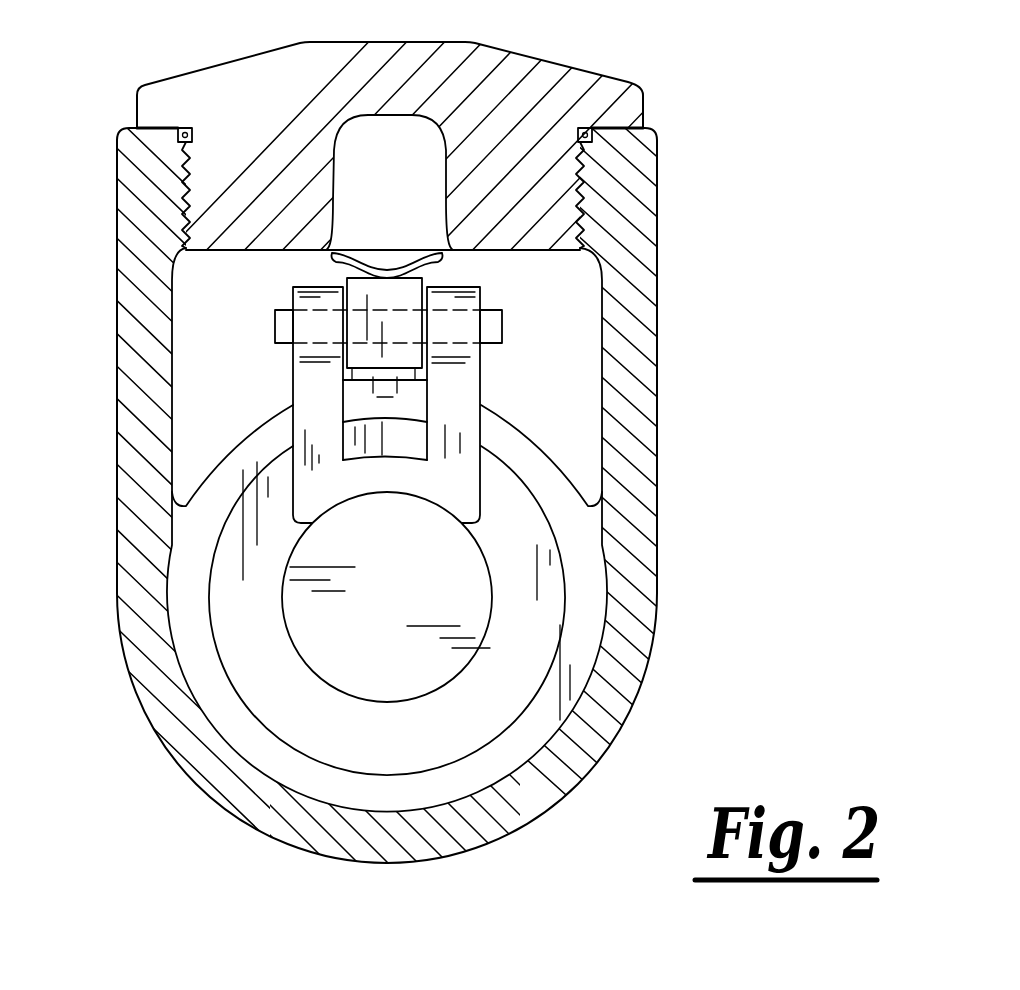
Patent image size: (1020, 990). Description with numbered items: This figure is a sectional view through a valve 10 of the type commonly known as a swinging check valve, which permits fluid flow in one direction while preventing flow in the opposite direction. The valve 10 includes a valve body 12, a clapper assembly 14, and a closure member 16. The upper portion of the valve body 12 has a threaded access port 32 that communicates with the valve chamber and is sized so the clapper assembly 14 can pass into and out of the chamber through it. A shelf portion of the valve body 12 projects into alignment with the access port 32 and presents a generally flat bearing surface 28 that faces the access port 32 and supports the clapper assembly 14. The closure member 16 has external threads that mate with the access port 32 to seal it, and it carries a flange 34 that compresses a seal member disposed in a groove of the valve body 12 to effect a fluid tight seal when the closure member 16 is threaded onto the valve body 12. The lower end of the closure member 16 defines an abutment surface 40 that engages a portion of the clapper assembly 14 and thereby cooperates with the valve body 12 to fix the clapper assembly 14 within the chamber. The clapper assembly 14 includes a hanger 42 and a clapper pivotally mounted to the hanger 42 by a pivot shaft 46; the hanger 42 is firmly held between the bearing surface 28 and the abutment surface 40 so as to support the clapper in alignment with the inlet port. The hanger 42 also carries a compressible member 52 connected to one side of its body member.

The valve 10 is at (796, 159).
The valve body 12 is at (640, 698).
The clapper assembly 14 is at (573, 602).
The closure member 16 is at (262, 52).
The bearing surface 28 is at (360, 355).
The access port 32 is at (183, 177).
The flange 34 is at (645, 106).
The abutment surface 40 is at (232, 252).
The hanger 42 is at (343, 293).
The pivot shaft 46 is at (502, 335).
The compressible member 52 is at (425, 265).